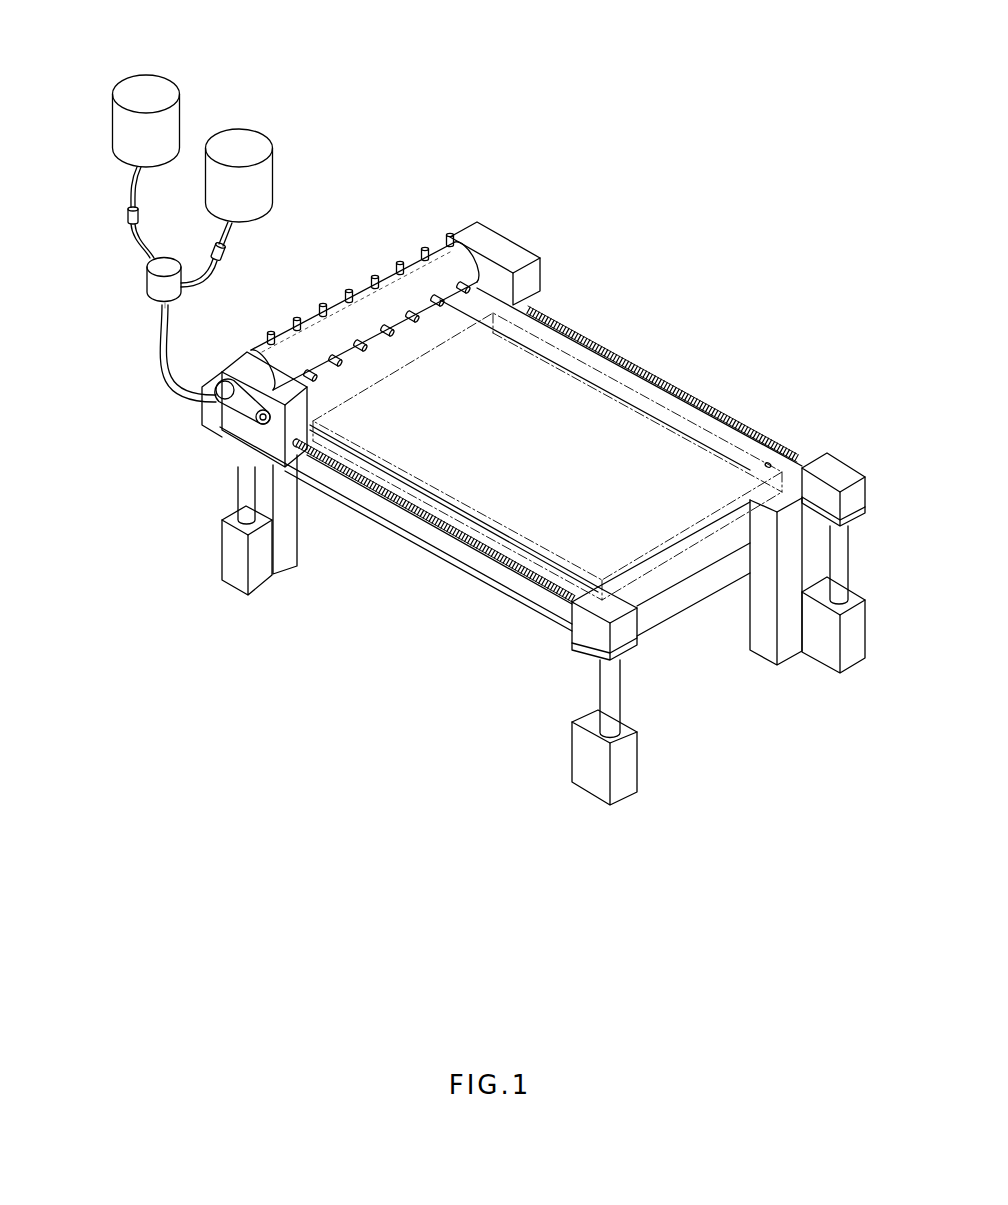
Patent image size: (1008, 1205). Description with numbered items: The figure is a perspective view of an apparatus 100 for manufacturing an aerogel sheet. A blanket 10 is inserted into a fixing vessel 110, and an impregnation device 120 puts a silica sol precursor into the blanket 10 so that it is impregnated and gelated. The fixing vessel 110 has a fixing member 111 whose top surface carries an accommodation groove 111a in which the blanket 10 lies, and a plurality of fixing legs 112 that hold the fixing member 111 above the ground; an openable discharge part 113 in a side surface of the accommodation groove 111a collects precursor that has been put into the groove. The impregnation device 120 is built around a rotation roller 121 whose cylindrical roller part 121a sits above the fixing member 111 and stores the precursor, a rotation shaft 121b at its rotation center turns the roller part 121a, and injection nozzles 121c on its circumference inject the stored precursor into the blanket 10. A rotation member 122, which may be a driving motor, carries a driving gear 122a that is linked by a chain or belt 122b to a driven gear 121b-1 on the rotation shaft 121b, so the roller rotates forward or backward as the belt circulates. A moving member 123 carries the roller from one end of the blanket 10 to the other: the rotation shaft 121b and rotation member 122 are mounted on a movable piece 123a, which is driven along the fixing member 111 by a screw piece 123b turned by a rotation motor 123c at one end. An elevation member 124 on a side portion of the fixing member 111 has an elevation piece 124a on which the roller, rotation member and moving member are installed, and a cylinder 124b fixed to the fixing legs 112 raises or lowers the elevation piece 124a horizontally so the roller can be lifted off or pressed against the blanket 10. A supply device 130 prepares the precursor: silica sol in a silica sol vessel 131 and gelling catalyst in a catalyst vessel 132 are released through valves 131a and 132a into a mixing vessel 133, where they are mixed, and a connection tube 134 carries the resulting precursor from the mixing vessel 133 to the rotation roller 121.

The apparatus of manufacturing an aerogel sheet 100 is at (682, 156).
The blanket 10 is at (585, 354).
The fixing vessel 110 is at (704, 312).
The fixing member 111 is at (703, 403).
The accommodation groove 111a is at (640, 440).
The fixing legs 112 is at (755, 530).
The discharge part 113 is at (793, 452).
The impregnation device 120 is at (157, 561).
The rotation roller 121 is at (435, 167).
The roller part 121a is at (413, 270).
The rotation shaft 121b is at (268, 352).
The driven gear 121b-1 is at (210, 409).
The injection nozzle 121c is at (452, 235).
The rotation member 122 is at (235, 528).
The driving gear 122a is at (258, 429).
The chain or belt 122b is at (222, 406).
The moving member 123 is at (261, 635).
The movable piece 123a is at (290, 451).
The screw piece 123b is at (462, 545).
The rotation motor 123c is at (588, 628).
The elevation member 124 is at (442, 712).
The elevation piece 124a is at (587, 649).
The cylinder 124b is at (600, 772).
The supply device 130 is at (357, 105).
The silica sol vessel 131 is at (146, 93).
The valve 131a is at (128, 216).
The catalyst vessel 132 is at (239, 147).
The valve 132a is at (214, 252).
The mixing vessel 133 is at (164, 262).
The connection tube 134 is at (170, 322).